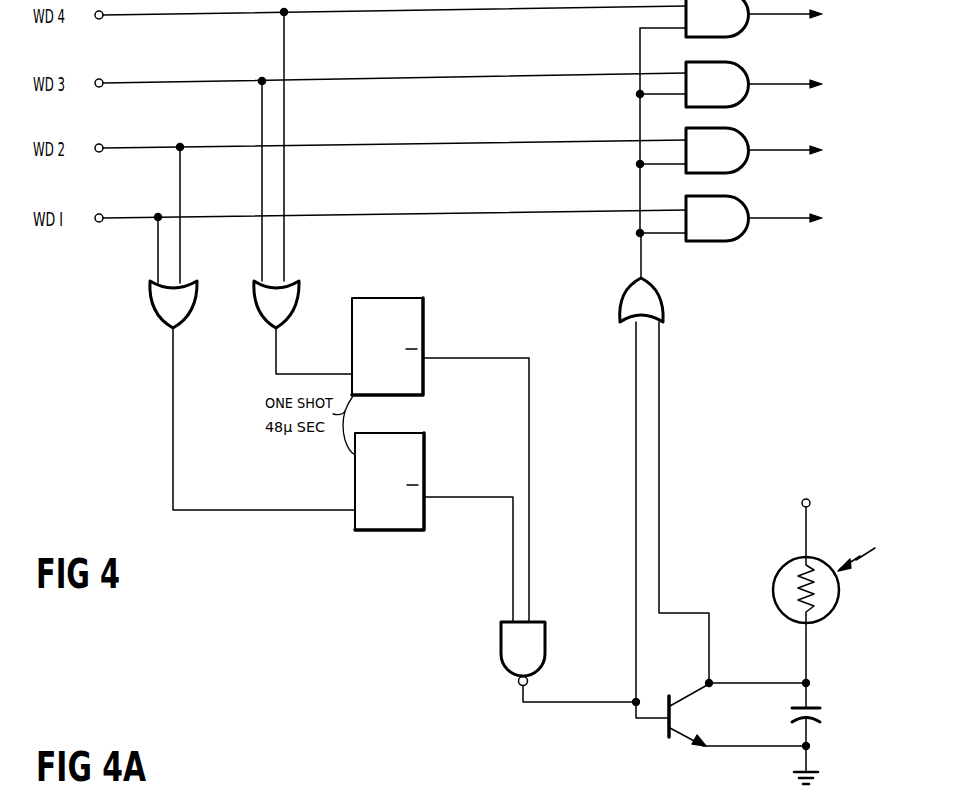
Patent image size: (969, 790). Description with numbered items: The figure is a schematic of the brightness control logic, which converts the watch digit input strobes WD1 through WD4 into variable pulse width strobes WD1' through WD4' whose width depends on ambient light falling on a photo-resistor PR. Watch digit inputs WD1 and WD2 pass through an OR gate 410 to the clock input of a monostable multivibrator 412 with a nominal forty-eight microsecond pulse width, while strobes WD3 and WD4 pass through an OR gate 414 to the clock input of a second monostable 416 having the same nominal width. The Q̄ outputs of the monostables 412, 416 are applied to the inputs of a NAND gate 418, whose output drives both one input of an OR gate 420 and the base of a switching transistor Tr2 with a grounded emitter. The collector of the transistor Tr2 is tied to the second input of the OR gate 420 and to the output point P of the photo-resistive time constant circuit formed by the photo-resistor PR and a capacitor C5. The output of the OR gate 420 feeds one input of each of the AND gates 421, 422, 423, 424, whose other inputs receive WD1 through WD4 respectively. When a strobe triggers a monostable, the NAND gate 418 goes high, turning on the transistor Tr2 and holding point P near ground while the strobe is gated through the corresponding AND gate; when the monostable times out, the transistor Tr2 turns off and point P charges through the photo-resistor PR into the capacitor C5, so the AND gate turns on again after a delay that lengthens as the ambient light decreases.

The OR gate 410 is at (157, 315).
The monostable multivibrator 412 is at (428, 446).
The OR gate 414 is at (263, 315).
The second monostable 416 is at (411, 298).
The NAND gate 418 is at (547, 646).
The OR gate 420 is at (661, 295).
The AND gate 421 is at (734, 197).
The AND gate 422 is at (734, 129).
The AND gate 423 is at (734, 63).
The AND gate 424 is at (783, 18).
The switching transistor Tr2 is at (674, 713).
The photo-resistor PR is at (833, 613).
The output point P is at (810, 683).
The capacitor C5 is at (821, 721).